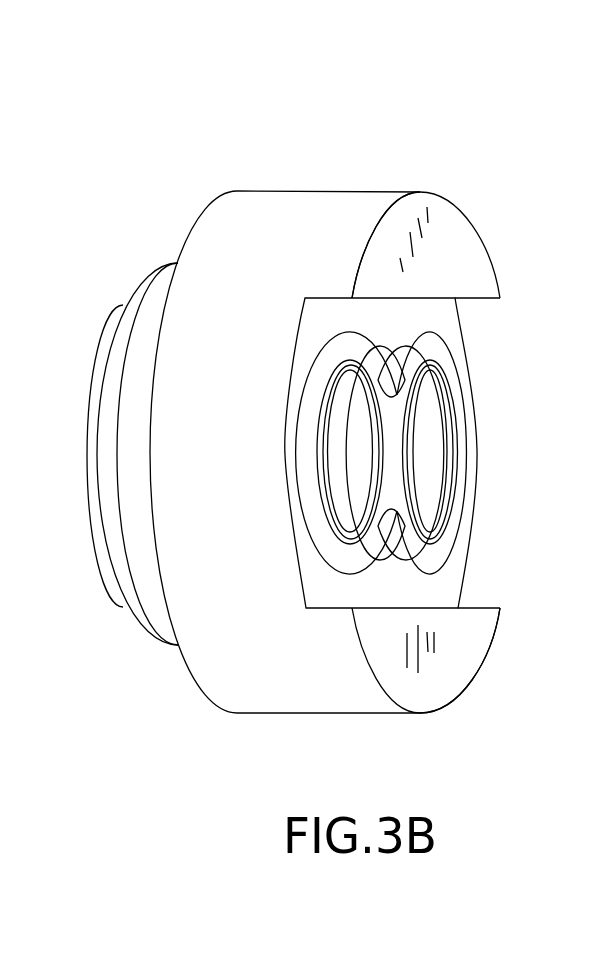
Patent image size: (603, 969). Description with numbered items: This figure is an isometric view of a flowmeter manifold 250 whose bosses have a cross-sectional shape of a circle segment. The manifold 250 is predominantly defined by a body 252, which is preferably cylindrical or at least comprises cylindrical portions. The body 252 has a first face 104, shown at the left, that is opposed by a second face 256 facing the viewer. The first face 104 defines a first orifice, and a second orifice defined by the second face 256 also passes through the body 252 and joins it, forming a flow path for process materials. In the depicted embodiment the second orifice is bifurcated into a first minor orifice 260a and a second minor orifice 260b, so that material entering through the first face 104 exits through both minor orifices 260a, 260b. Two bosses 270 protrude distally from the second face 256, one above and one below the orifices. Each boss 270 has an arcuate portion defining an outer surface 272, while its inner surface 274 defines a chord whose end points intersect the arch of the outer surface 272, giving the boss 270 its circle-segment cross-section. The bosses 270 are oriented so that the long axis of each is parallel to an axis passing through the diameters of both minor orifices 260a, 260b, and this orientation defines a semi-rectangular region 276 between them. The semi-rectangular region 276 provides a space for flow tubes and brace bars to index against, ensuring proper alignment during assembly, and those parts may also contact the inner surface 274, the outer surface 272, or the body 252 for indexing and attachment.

The manifold 250 is at (342, 134).
The body 252 is at (220, 232).
The first face 104 is at (103, 347).
The second face 256 is at (448, 320).
The first minor orifice 260a is at (344, 453).
The second minor orifice 260b is at (430, 458).
The boss 270 is at (445, 238).
The outer surface 272 is at (363, 210).
The inner surface 274 is at (483, 300).
The semi-rectangular region 276 is at (398, 601).